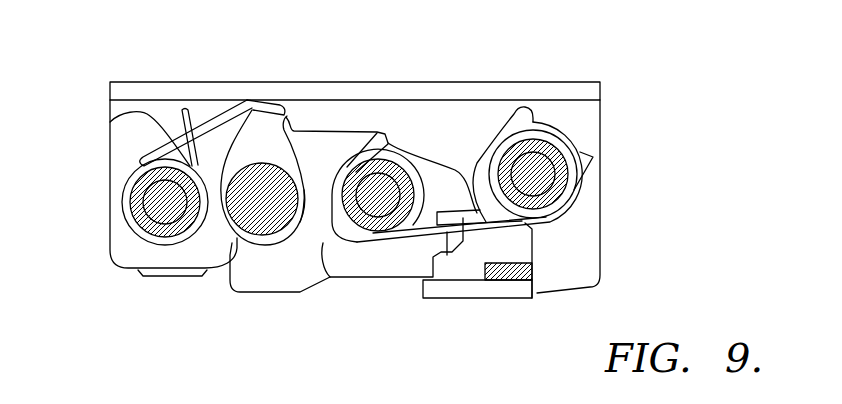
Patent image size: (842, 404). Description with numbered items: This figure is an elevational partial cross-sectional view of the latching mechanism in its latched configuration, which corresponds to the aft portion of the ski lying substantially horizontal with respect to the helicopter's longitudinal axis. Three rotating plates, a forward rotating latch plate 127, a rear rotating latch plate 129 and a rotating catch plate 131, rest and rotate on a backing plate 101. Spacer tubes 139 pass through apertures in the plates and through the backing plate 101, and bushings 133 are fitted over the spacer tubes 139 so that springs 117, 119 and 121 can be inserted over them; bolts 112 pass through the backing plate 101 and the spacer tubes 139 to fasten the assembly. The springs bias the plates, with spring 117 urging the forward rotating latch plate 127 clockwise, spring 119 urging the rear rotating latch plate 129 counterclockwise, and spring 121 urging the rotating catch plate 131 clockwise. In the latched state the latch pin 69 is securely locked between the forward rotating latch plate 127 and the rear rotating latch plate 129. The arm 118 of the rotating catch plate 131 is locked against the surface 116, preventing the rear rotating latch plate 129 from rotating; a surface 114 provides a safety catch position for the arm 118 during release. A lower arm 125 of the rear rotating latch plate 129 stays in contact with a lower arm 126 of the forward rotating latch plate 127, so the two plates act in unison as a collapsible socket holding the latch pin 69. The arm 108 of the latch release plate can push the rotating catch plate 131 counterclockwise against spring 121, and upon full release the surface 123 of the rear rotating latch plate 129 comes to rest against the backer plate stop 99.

The latch pin 69 is at (256, 222).
The backer plate stop 99 is at (437, 293).
The backing plate 101 is at (593, 90).
The arm 108 is at (538, 268).
The bolts 112 is at (170, 185).
The surface 114 is at (437, 268).
The surface 116 is at (531, 273).
The spring 117 is at (128, 193).
The arm 118 is at (473, 180).
The spring 119 is at (399, 165).
The spring 121 is at (548, 124).
The surface 123 is at (317, 288).
The lower arm 125 is at (291, 133).
The lower arm 126 is at (268, 115).
The forward rotating latch plate 127 is at (128, 262).
The rear rotating latch plate 129 is at (316, 265).
The rotating catch plate 131 is at (593, 268).
The bushings 133 is at (142, 167).
The spacer tubes 139 is at (152, 210).